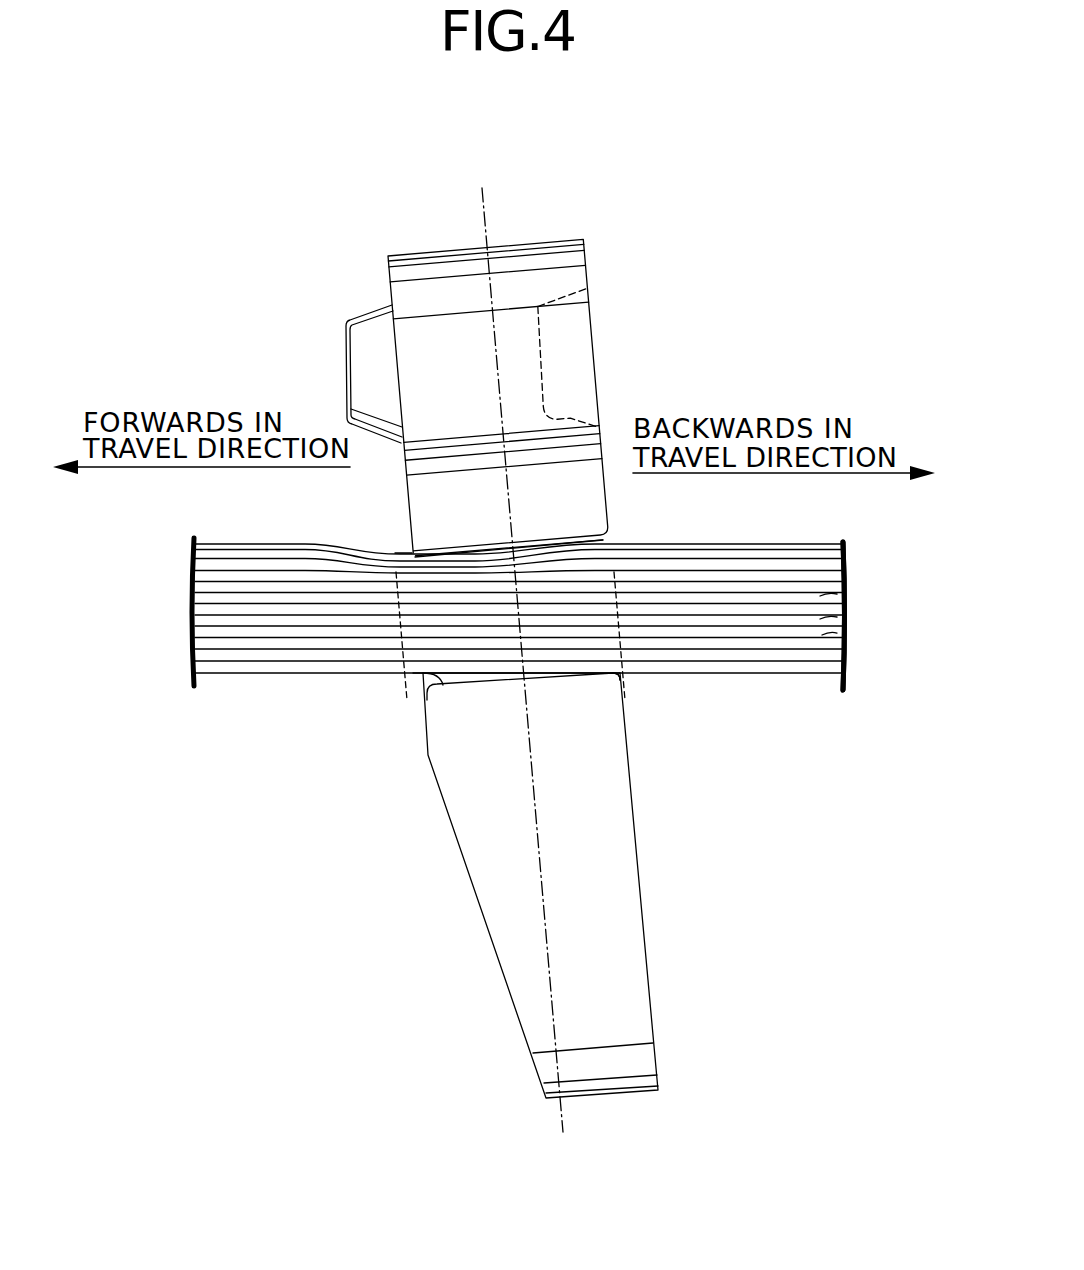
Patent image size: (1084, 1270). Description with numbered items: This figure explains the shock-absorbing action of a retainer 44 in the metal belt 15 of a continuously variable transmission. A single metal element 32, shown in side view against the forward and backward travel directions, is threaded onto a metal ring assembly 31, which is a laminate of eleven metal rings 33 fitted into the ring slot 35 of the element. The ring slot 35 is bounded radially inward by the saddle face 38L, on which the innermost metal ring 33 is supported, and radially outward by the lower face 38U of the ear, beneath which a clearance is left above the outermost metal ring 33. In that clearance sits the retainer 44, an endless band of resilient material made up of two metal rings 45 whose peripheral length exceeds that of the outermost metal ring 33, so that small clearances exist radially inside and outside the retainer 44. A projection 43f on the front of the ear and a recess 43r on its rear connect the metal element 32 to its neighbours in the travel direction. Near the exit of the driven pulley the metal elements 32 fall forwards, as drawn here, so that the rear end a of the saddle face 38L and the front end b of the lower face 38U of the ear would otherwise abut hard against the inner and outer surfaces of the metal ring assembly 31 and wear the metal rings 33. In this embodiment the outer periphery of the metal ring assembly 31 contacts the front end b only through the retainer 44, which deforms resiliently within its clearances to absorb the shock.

The metal belt 15 is at (692, 317).
The metal element 32 is at (603, 302).
The projection 43f is at (365, 370).
The recess 43r is at (570, 418).
The retainer 44 is at (265, 543).
The metal ring assembly 31 is at (763, 568).
The ring slot 35 is at (597, 567).
The lower face of the ear 38U is at (534, 553).
The saddle face 38L is at (413, 673).
The metal ring 45 is at (843, 555).
The metal ring 33 is at (843, 620).
The rear end of the saddle face a is at (622, 677).
The front end of the lower face of the ear b is at (395, 553).